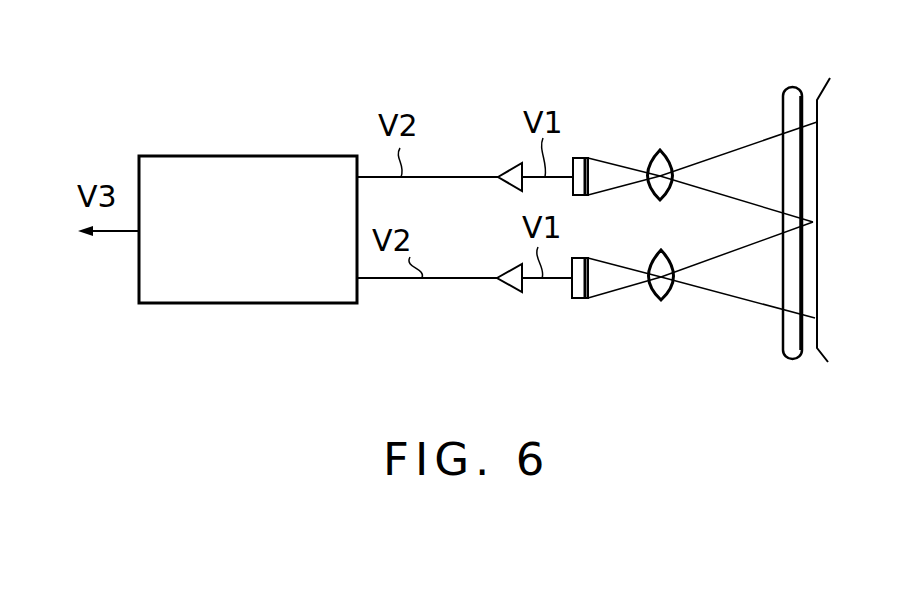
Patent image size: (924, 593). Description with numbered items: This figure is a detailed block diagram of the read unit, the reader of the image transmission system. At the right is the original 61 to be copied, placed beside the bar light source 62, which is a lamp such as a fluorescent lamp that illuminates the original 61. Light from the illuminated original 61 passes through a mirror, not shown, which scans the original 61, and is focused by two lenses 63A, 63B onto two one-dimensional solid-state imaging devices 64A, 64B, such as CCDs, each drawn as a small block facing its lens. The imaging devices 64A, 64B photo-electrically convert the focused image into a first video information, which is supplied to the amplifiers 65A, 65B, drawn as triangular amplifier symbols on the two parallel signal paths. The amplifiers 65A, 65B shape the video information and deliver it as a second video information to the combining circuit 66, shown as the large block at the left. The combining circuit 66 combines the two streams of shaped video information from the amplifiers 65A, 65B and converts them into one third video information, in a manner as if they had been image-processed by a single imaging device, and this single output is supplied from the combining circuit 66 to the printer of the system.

The original 61 is at (820, 103).
The bar light source 62 is at (793, 87).
The lens 63A is at (667, 150).
The lens 63B is at (670, 300).
The one-dimensional solid-state imaging device 64A is at (585, 158).
The one-dimensional solid-state imaging device 64B is at (577, 298).
The amplifier 65A is at (510, 167).
The amplifier 65B is at (507, 292).
The combining circuit 66 is at (293, 156).